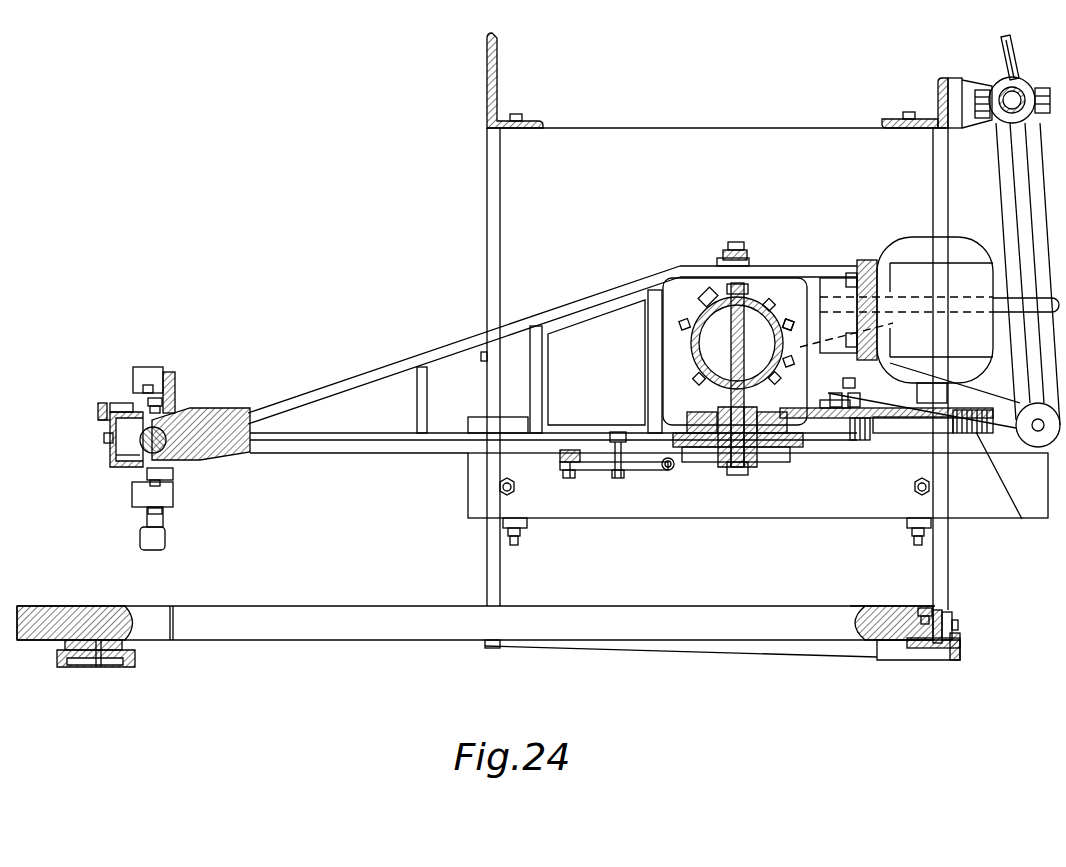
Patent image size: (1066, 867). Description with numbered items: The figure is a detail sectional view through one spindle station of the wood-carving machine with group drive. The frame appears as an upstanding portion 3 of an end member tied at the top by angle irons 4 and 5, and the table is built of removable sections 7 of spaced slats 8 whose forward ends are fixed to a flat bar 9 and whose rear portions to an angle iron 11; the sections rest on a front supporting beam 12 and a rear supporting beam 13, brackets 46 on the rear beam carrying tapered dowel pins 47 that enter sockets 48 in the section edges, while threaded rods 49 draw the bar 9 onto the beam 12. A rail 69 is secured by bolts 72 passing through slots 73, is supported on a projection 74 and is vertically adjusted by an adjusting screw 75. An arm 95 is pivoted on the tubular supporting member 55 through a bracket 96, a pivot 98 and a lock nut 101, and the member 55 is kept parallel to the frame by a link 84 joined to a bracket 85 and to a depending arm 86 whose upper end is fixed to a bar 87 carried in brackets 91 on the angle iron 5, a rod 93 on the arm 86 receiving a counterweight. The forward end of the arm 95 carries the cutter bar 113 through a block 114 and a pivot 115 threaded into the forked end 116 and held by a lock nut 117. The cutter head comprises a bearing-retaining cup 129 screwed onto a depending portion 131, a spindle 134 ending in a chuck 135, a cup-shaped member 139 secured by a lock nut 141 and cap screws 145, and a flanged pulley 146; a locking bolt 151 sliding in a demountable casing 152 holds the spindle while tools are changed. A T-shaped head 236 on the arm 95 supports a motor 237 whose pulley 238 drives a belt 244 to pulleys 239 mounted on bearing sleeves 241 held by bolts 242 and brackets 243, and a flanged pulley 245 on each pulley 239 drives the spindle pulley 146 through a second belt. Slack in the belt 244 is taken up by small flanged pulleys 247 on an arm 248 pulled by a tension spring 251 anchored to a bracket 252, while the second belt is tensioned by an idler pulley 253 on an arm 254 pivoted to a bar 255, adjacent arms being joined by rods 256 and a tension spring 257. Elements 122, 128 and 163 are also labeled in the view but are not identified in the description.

The upstanding portion 3 is at (522, 160).
The angle iron 4 is at (497, 85).
The angle iron 5 is at (938, 80).
The removable table section 7 is at (297, 604).
The slat 8 is at (362, 605).
The flat bar 9 is at (122, 645).
The angle iron 11 is at (940, 650).
The front supporting beam 12 is at (135, 660).
The rear supporting beam 13 is at (870, 657).
The bracket 46 is at (950, 612).
The tapered dowel pin 47 is at (922, 648).
The socket 48 is at (925, 609).
The rod 49 is at (101, 667).
The tubular supporting member 55 is at (700, 333).
The rail 69 is at (468, 482).
The bolt 72 is at (500, 490).
The slot 73 is at (503, 481).
The projection 74 is at (527, 524).
The adjusting screw 75 is at (519, 545).
The link 84 is at (1012, 425).
The bracket 85 is at (780, 320).
The arm 86 is at (1020, 190).
The bar 87 is at (1003, 122).
The bracket 91 is at (965, 82).
The rod 93 is at (1015, 60).
The arm 95 is at (355, 375).
The bracket 96 is at (703, 296).
The pivot 98 is at (743, 246).
The lock nut 101 is at (727, 254).
The cutter bar 113 is at (112, 452).
The block 114 is at (185, 432).
The pivot 115 is at (168, 413).
The forked end 116 is at (170, 450).
The lock nut 117 is at (170, 403).
The screw 122 is at (104, 440).
The shaft 128 is at (1012, 305).
The bearing-retaining cup 129 is at (135, 495).
The depending portion 131 is at (165, 472).
The spindle 134 is at (165, 520).
The chuck 135 is at (165, 545).
The cup-shaped member 139 is at (145, 378).
The lock nut 141 is at (157, 370).
The cap screw 145 is at (172, 382).
The flanged pulley 146 is at (118, 465).
The locking bolt 151 is at (98, 410).
The demountable casing 152 is at (120, 404).
The spring 163 is at (98, 420).
The T-shaped head 236 is at (858, 258).
The motor 237 is at (943, 275).
The motor pulley 238 is at (985, 450).
The pulley 239 is at (700, 412).
The bearing sleeve 241 is at (720, 458).
The bolt 242 is at (738, 478).
The bracket 243 is at (692, 362).
The drive belt 244 is at (840, 430).
The flanged pulley 245 is at (776, 456).
The flanged pulley 247 is at (790, 440).
The arm 248 is at (832, 412).
The tension spring 251 is at (850, 378).
The bracket 252 is at (810, 368).
The idler pulley 253 is at (596, 362).
The arm 254 is at (597, 472).
The bar 255 is at (568, 450).
The rod 256 is at (670, 470).
The tension spring 257 is at (640, 470).